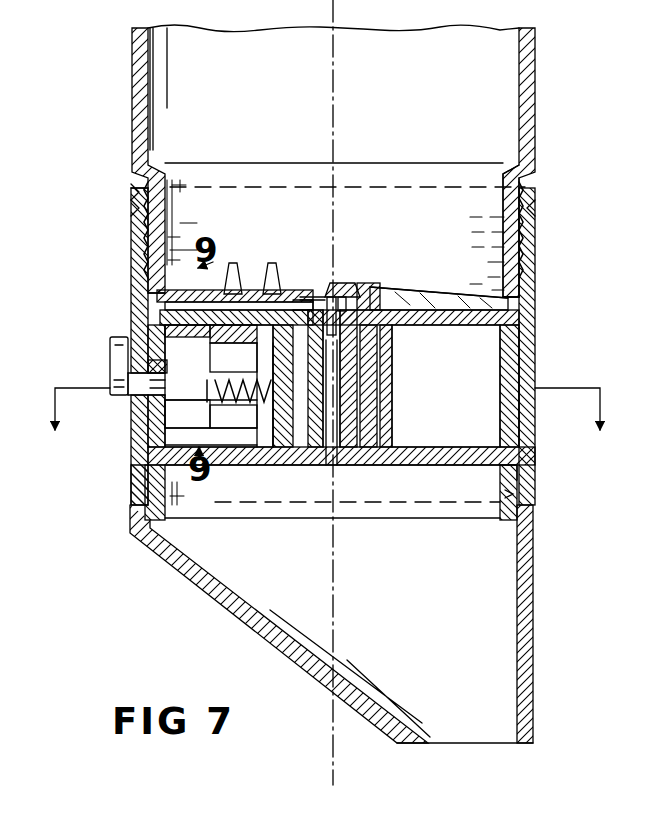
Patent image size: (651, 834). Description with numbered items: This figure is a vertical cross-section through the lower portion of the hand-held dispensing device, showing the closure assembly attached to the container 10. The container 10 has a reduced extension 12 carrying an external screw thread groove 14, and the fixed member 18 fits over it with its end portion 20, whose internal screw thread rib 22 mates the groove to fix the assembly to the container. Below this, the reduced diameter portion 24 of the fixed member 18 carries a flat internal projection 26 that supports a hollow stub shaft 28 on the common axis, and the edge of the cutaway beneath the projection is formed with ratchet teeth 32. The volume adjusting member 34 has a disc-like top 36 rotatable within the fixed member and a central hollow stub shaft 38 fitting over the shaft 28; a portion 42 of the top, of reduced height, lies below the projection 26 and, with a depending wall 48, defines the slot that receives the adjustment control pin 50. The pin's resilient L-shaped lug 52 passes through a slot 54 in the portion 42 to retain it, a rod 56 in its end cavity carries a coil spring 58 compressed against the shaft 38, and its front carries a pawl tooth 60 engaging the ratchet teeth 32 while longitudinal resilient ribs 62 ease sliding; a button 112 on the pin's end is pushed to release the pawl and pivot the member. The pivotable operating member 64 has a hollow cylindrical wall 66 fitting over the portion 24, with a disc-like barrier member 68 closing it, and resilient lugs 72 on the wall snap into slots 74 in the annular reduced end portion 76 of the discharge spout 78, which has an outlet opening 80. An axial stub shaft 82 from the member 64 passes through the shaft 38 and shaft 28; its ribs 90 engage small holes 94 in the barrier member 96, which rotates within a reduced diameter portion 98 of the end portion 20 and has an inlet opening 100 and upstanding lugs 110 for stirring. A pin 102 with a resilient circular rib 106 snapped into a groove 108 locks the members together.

The container 10 is at (535, 112).
The reduced extension 12 is at (510, 205).
The external screw thread groove 14 is at (516, 247).
The fixed member 18 is at (549, 295).
The end portion 20 is at (143, 207).
The screw thread rib 22 is at (518, 275).
The reduced diameter portion 24 is at (525, 362).
The flat internal projection 26 is at (200, 296).
The hollow stub shaft 28 is at (363, 378).
The ratchet teeth 32 is at (153, 352).
The dispensing compartment volume adjusting member 34 is at (418, 311).
The top 36 is at (452, 328).
The central hollow stub shaft 38 is at (390, 355).
The portion of top 42 is at (150, 325).
The wall 48 is at (283, 449).
The dispensing compartment volume adjustment control pin 50 is at (167, 400).
The resilient L-shaped lug 52 is at (243, 333).
The slot 54 is at (252, 362).
The rod 56 is at (208, 396).
The coil spring 58 is at (256, 400).
The pawl tooth 60 is at (153, 363).
The longitudinal resilient ribs 62 is at (167, 423).
The pivotable closure member operating assembly 64 is at (537, 411).
The hollow cylindrical wall 66 is at (138, 452).
The disc-like barrier member 68 is at (418, 458).
The resilient lugs 72 is at (520, 492).
The slots 74 is at (152, 466).
The annular reduced end portion 76 is at (515, 463).
The discharge spout 78 is at (535, 610).
The outlet opening 80 is at (480, 744).
The axial stub shaft 82 is at (352, 420).
The ribs 90 is at (304, 300).
The small holes 94 is at (326, 288).
The barrier member 96 is at (383, 289).
The reduced diameter portion 98 is at (527, 306).
The inlet opening 100 is at (442, 300).
The pin 102 is at (338, 285).
The resilient circular rib 106 is at (343, 298).
The groove 108 is at (331, 293).
The upstanding lugs 110 is at (270, 262).
The button 112 is at (108, 372).